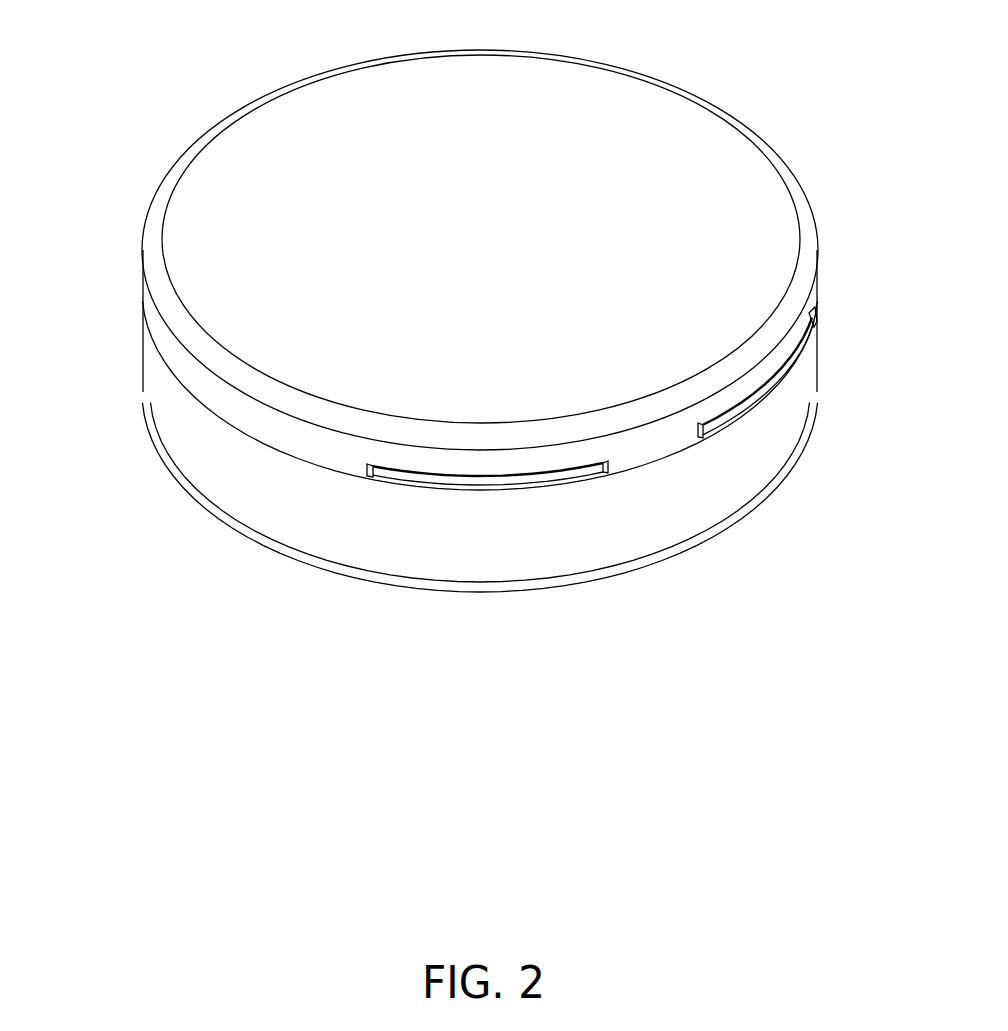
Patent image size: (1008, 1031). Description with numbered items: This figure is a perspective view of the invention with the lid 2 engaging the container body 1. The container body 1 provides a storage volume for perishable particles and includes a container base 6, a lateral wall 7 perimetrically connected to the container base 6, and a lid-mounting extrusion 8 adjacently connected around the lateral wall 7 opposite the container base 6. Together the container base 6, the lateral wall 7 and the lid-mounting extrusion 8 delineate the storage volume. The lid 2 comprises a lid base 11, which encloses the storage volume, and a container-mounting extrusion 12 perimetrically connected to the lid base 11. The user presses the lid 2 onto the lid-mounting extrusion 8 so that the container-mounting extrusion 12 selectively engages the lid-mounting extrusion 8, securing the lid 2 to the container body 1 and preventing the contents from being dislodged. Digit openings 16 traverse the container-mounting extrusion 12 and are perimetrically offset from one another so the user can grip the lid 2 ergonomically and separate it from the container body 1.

The container body 1 is at (460, 335).
The lid 2 is at (442, 226).
The container base 6 is at (502, 484).
The lateral wall 7 is at (800, 388).
The lid-mounting extrusion 8 is at (483, 484).
The lid base 11 is at (458, 80).
The container-mounting extrusion 12 is at (158, 330).
The digit openings 16 is at (550, 477).